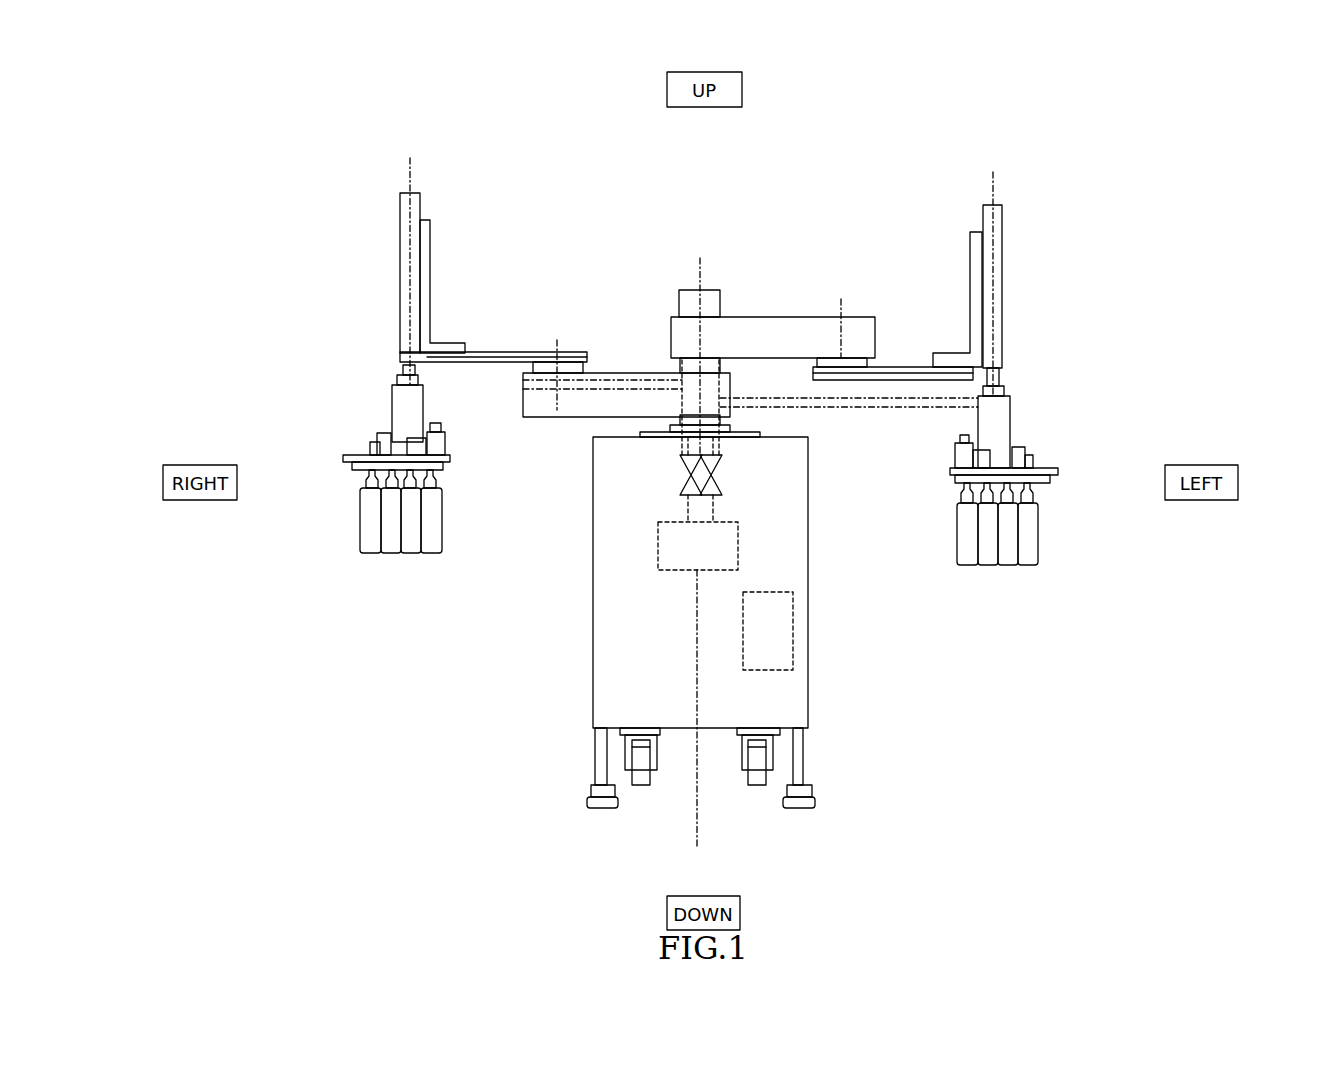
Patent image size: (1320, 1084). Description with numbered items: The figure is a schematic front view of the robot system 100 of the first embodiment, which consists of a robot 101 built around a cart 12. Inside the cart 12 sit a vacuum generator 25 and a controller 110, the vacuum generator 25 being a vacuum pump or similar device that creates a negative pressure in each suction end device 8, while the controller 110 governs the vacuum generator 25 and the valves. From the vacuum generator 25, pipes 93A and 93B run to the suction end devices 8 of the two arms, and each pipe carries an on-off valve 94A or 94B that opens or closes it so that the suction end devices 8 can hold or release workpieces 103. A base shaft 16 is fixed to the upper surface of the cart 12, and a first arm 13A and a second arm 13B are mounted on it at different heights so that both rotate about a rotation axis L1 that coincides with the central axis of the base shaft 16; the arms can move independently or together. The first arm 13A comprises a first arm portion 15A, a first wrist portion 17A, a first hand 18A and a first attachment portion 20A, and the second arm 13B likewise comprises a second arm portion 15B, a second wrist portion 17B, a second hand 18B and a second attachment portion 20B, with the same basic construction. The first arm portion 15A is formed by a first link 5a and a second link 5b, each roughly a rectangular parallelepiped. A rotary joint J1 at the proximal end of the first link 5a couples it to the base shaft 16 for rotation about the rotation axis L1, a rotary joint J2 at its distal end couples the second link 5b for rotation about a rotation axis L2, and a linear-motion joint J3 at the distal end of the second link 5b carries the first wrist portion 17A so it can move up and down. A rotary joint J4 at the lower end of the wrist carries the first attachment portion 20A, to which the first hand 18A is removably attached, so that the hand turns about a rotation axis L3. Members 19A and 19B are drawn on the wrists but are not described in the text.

The robot system 100 is at (686, 63).
The robot 101 is at (546, 714).
The cart 12 is at (592, 668).
The base shaft 16 is at (716, 290).
The first arm 13A is at (503, 346).
The second arm 13B is at (899, 354).
The pipe 93A is at (527, 352).
The pipe 93B is at (949, 367).
The first arm portion 15A is at (467, 517).
The second arm portion 15B is at (840, 517).
The first link 5a is at (533, 400).
The second link 5b is at (489, 368).
The first wrist portion 17A is at (400, 220).
The second wrist portion 17B is at (1002, 250).
The fourth arm (A side) 19A is at (425, 318).
The fourth arm (B side) 19B is at (985, 340).
The first attachment portion 20A is at (392, 384).
The second attachment portion 20B is at (1008, 392).
The first hand 18A is at (342, 445).
The second hand 18B is at (1050, 456).
The suction end device 8 is at (367, 477).
The workpiece 103 is at (360, 520).
The on-off valve 94A is at (682, 480).
The on-off valve 94B is at (718, 480).
The controller 110 is at (795, 655).
The vacuum generator 25 is at (698, 724).
The rotation axis L1 is at (700, 346).
The rotation axis L2 is at (701, 344).
The rotation axis L3 is at (700, 267).
The rotary joint J1 is at (666, 335).
The rotary joint J2 is at (578, 352).
The linear-motion joint J3 is at (410, 278).
The rotary joint J4 is at (398, 365).